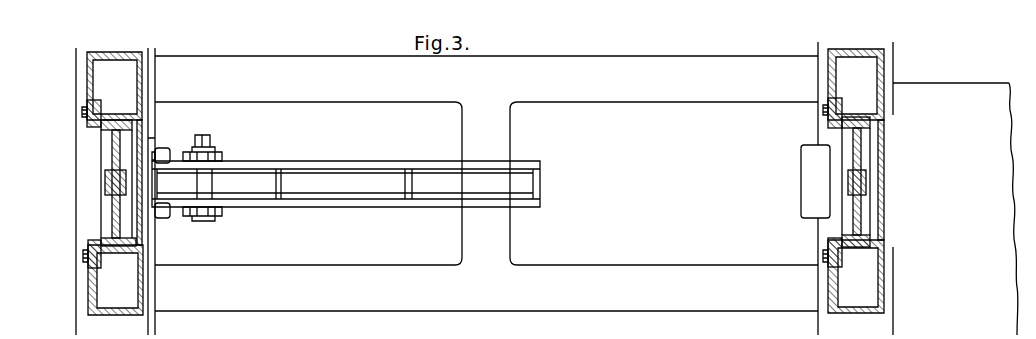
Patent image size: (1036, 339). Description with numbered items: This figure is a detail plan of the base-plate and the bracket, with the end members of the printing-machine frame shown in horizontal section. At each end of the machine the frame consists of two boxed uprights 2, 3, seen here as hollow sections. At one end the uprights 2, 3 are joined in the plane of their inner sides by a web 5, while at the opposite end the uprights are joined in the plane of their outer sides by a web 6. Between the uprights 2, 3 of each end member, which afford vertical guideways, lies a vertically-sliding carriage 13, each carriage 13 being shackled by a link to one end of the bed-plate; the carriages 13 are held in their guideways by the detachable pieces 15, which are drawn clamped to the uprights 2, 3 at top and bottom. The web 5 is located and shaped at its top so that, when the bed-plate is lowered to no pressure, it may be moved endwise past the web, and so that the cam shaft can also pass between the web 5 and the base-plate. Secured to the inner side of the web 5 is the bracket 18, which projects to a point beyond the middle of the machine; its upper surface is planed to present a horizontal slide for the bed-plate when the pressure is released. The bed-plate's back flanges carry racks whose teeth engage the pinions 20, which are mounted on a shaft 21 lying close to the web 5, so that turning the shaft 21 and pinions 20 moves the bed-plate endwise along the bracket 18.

The boxed upright 2 is at (485, 84).
The boxed upright 3 is at (486, 277).
The web 5 is at (143, 233).
The web 6 is at (885, 195).
The vertically-sliding carriage 13 is at (855, 223).
The detachable piece 15 is at (828, 248).
The bracket 18 is at (332, 207).
The pinion 20 is at (222, 210).
The shaft 21 is at (212, 185).